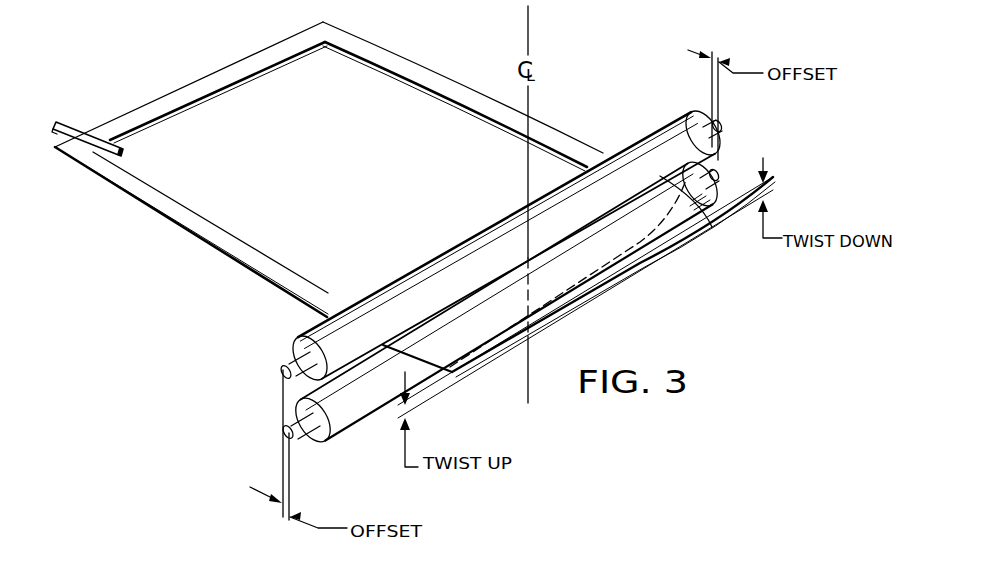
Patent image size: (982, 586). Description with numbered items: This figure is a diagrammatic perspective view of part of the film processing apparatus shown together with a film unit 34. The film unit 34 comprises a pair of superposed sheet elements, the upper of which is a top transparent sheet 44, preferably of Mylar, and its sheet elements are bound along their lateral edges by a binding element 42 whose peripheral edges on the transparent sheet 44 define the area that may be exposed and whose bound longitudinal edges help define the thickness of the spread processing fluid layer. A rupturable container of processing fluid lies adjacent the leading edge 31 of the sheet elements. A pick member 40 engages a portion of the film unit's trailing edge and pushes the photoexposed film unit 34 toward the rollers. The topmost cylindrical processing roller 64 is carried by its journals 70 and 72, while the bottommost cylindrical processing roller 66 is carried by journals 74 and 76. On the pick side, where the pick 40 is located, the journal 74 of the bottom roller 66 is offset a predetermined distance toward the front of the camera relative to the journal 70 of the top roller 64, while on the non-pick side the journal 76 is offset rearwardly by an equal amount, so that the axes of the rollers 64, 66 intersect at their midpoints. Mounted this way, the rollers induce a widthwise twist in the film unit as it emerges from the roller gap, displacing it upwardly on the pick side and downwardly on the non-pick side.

The leading edge 31 is at (609, 280).
The film unit 34 is at (422, 62).
The pick member 40 is at (56, 130).
The binding element 42 is at (572, 152).
The top transparent sheet 44 is at (455, 140).
The topmost cylindrical processing roller 64 is at (447, 251).
The bottommost cylindrical processing roller 66 is at (375, 415).
The journal 70 is at (289, 356).
The journal 72 is at (719, 118).
The journal 74 is at (295, 440).
The journal 76 is at (707, 180).